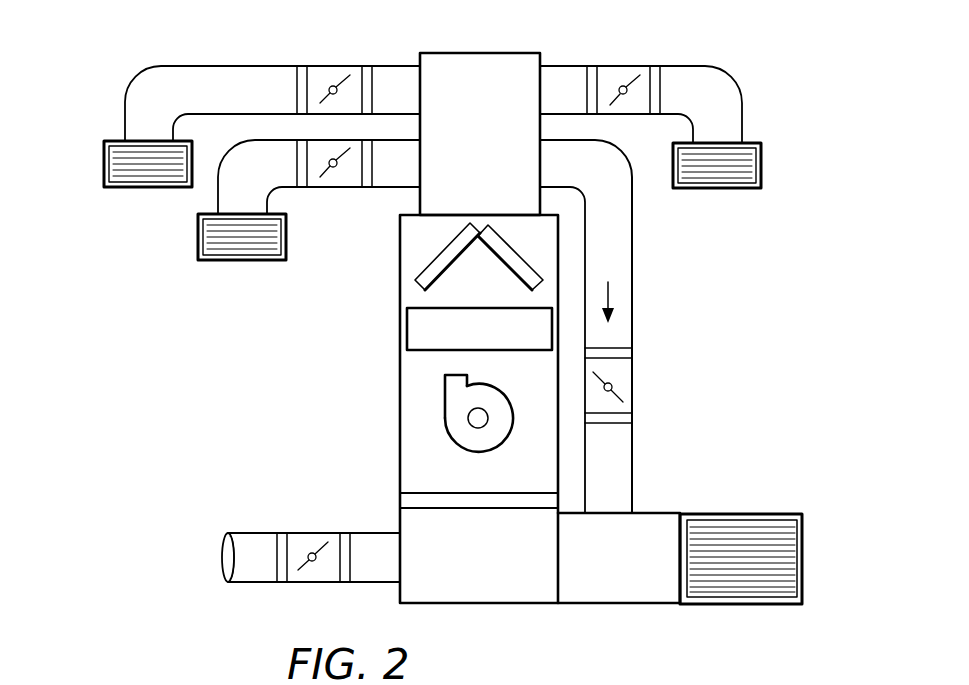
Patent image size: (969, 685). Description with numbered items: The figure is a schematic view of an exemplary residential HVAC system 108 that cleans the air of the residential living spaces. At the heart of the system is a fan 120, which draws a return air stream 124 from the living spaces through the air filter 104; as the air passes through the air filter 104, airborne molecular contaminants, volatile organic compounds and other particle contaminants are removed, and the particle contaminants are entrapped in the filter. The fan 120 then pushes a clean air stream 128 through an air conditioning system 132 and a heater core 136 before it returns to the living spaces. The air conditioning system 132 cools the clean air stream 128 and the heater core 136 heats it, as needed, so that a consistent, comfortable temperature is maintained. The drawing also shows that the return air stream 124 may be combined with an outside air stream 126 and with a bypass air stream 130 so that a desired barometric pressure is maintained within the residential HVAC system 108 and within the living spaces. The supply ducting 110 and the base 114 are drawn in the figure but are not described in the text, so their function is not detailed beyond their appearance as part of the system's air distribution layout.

The residential HVAC system 108 is at (778, 54).
The air filter 104 is at (405, 502).
The base / return plenum 114 is at (642, 593).
The return air stream 124 is at (778, 558).
The outside air stream 126 is at (223, 558).
The supply ducts 110 is at (233, 147).
The clean air stream 128 is at (212, 233).
The bypass air stream 130 is at (633, 297).
The air conditioning system 132 is at (432, 265).
The heater core 136 is at (418, 325).
The fan 120 is at (452, 425).